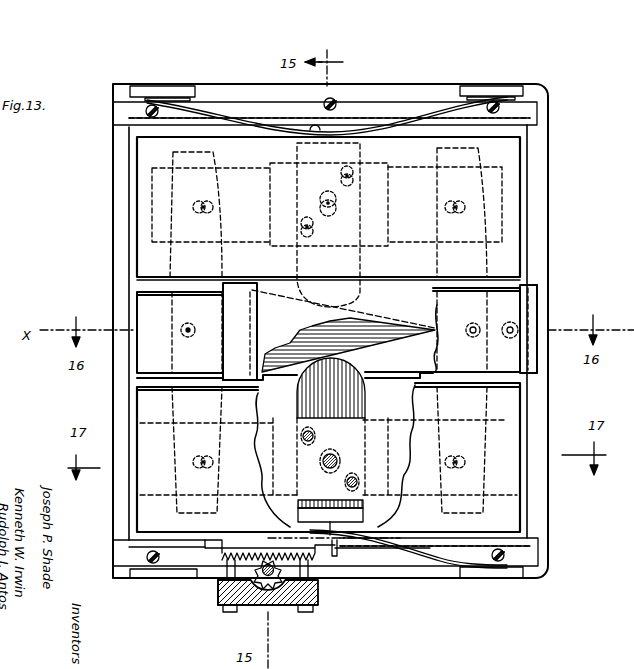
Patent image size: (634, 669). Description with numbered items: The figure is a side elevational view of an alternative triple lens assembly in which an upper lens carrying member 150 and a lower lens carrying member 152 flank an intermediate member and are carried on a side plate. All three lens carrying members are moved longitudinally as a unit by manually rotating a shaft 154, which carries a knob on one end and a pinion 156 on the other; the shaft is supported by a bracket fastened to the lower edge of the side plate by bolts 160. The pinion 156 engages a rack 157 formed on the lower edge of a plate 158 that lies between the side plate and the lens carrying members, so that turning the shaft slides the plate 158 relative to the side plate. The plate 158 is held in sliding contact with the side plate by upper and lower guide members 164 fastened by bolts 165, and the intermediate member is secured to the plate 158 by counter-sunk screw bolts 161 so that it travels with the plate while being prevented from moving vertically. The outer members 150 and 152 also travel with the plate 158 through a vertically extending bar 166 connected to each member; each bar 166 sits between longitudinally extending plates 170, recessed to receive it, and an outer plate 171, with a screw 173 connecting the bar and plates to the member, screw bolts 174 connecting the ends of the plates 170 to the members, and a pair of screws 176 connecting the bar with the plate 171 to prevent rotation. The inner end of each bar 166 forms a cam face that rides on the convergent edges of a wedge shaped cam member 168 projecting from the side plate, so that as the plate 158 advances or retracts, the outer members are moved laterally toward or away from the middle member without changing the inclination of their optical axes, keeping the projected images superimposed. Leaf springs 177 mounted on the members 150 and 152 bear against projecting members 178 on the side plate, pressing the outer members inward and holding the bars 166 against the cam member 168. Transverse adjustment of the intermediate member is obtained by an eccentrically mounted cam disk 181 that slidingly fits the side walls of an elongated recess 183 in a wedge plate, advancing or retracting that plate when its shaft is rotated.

The upper lens carrying member 150 is at (515, 152).
The lower lens carrying member 152 is at (515, 403).
The shaft 154 is at (285, 606).
The pinion 156 is at (240, 610).
The rack 157 is at (248, 548).
The plate 158 is at (336, 560).
The bolts 160 is at (226, 613).
The screw bolts 161 is at (188, 337).
The guide members 164 is at (380, 102).
The bolts 165 is at (500, 106).
The bar 166 is at (370, 256).
The wedge shaped cam member 168 is at (368, 343).
The plates 170 is at (232, 243).
The outer plate 171 is at (378, 163).
The screw 173 is at (338, 455).
The screw bolts 174 is at (214, 212).
The screws 176 is at (345, 483).
The leaf springs 177 is at (218, 100).
The projecting members 178 is at (163, 87).
The cam disk 181 is at (528, 322).
The elongated recess 183 is at (533, 298).